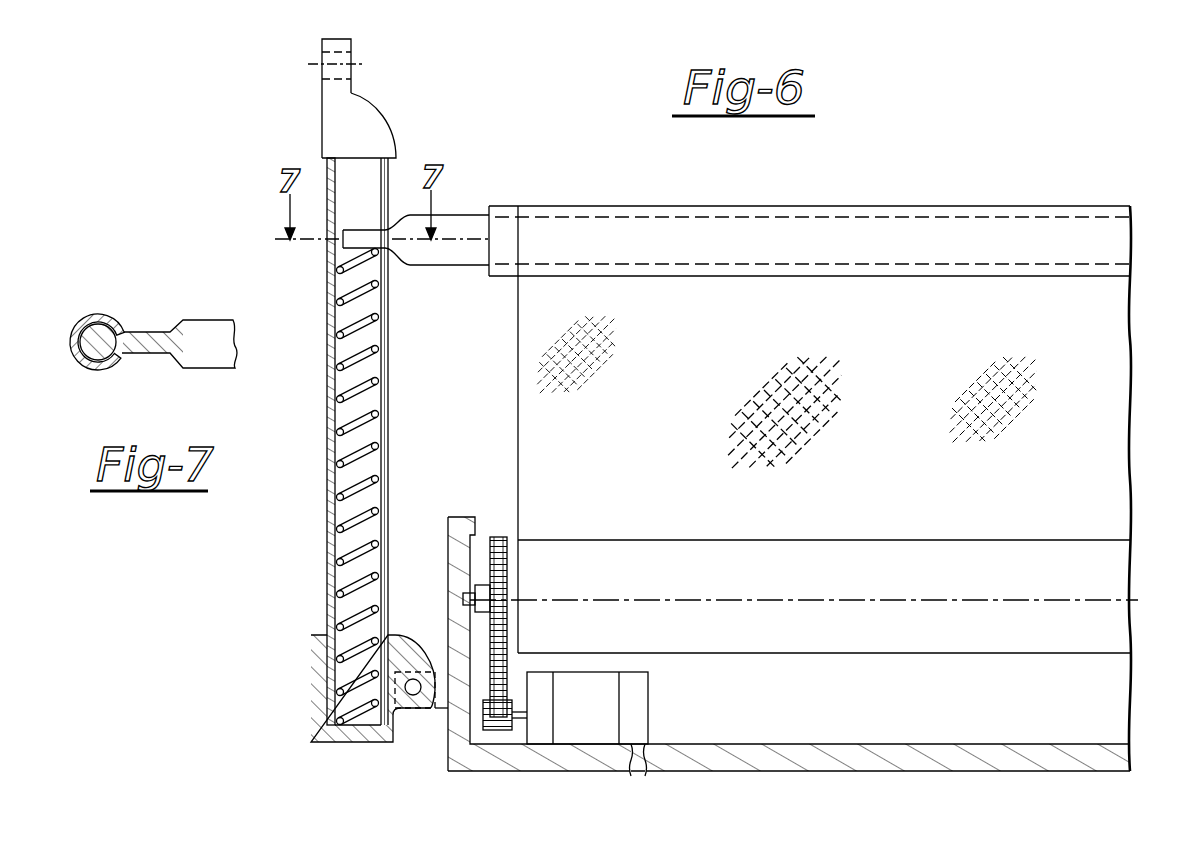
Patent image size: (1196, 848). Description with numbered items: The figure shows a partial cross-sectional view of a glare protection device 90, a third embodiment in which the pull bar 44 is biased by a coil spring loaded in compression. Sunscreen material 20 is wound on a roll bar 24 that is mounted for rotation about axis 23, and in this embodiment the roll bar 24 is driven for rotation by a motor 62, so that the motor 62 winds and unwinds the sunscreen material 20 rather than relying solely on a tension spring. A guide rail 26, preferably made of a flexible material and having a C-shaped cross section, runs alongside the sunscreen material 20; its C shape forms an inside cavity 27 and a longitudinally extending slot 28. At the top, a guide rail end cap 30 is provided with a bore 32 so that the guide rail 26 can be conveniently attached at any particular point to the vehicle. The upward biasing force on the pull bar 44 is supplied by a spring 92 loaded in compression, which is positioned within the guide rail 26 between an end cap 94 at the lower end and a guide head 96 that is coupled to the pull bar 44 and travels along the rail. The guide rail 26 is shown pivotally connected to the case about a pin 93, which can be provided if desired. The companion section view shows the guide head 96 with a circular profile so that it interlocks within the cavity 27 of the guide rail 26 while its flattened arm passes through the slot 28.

In FIG. 6, the sunscreen material 20 is at (1107, 362).
In FIG. 6, the axis 23 is at (1137, 601).
In FIG. 6, the roll bar 24 is at (775, 540).
In FIG. 6, the guide rail 26 is at (327, 541).
In FIG. 6, the inside cavity 27 is at (363, 466).
In FIG. 6, the longitudinally extending slot 28 is at (383, 404).
In FIG. 7, the longitudinally extending slot 28 is at (122, 322).
In FIG. 6, the guide rail end cap 30 is at (377, 112).
In FIG. 6, the bore 32 is at (312, 65).
In FIG. 6, the pull bar 44 is at (552, 206).
In FIG. 6, the motor 62 is at (637, 702).
In FIG. 6, the glare protection device 90 is at (624, 190).
In FIG. 6, the spring 92 is at (370, 353).
In FIG. 6, the pin 93 is at (417, 696).
In FIG. 6, the end cap 94 is at (311, 693).
In FIG. 6, the guide head 96 is at (350, 238).
In FIG. 7, the guide head 96 is at (106, 358).